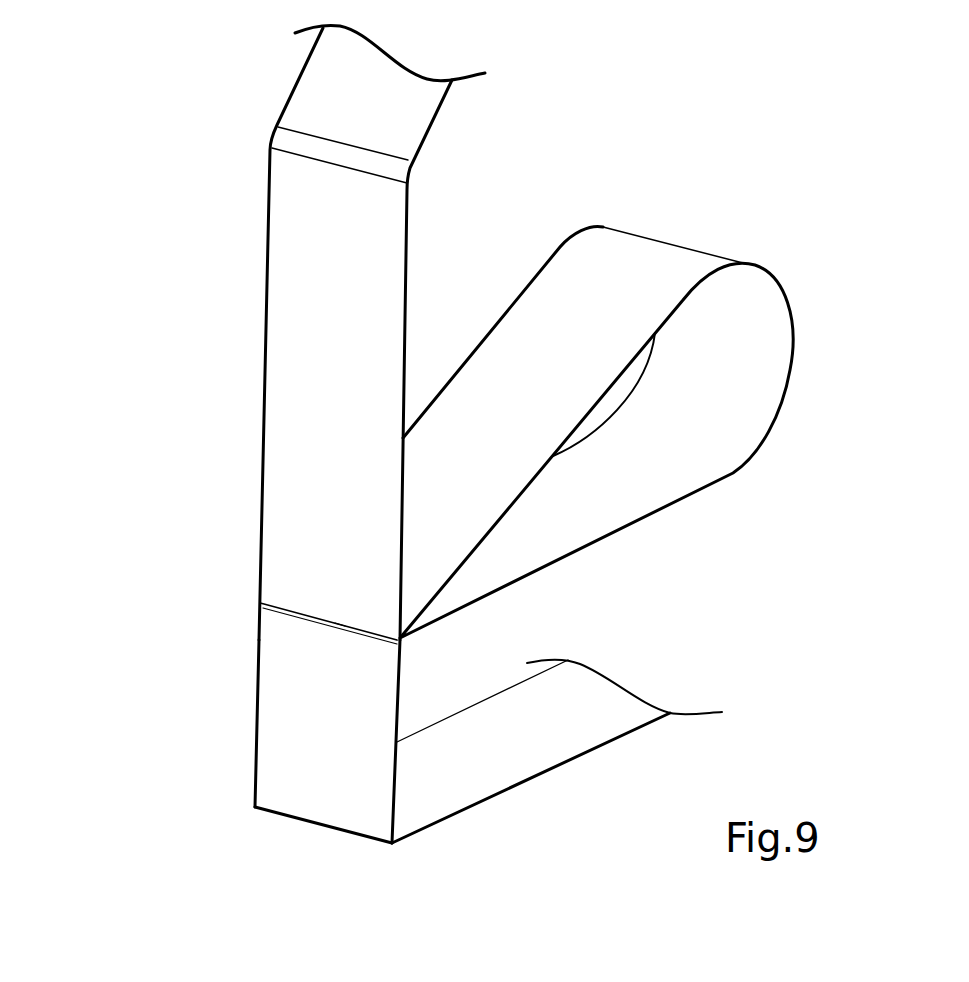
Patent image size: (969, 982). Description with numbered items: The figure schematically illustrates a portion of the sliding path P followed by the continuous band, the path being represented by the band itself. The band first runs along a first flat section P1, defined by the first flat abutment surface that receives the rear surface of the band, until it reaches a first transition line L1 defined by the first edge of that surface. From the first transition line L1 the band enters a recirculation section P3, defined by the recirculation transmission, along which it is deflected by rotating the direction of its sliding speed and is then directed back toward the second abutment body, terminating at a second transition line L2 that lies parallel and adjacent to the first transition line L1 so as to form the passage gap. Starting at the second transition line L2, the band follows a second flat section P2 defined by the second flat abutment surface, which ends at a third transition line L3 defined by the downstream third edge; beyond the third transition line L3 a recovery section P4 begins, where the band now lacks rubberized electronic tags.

The sliding path P is at (197, 149).
The first flat section P1 is at (318, 311).
The second flat section P2 is at (312, 707).
The recirculation section P3 is at (628, 276).
The recovery section P4 is at (569, 714).
The first transition line L1 is at (287, 612).
The second transition line L2 is at (338, 632).
The third transition line L3 is at (315, 824).